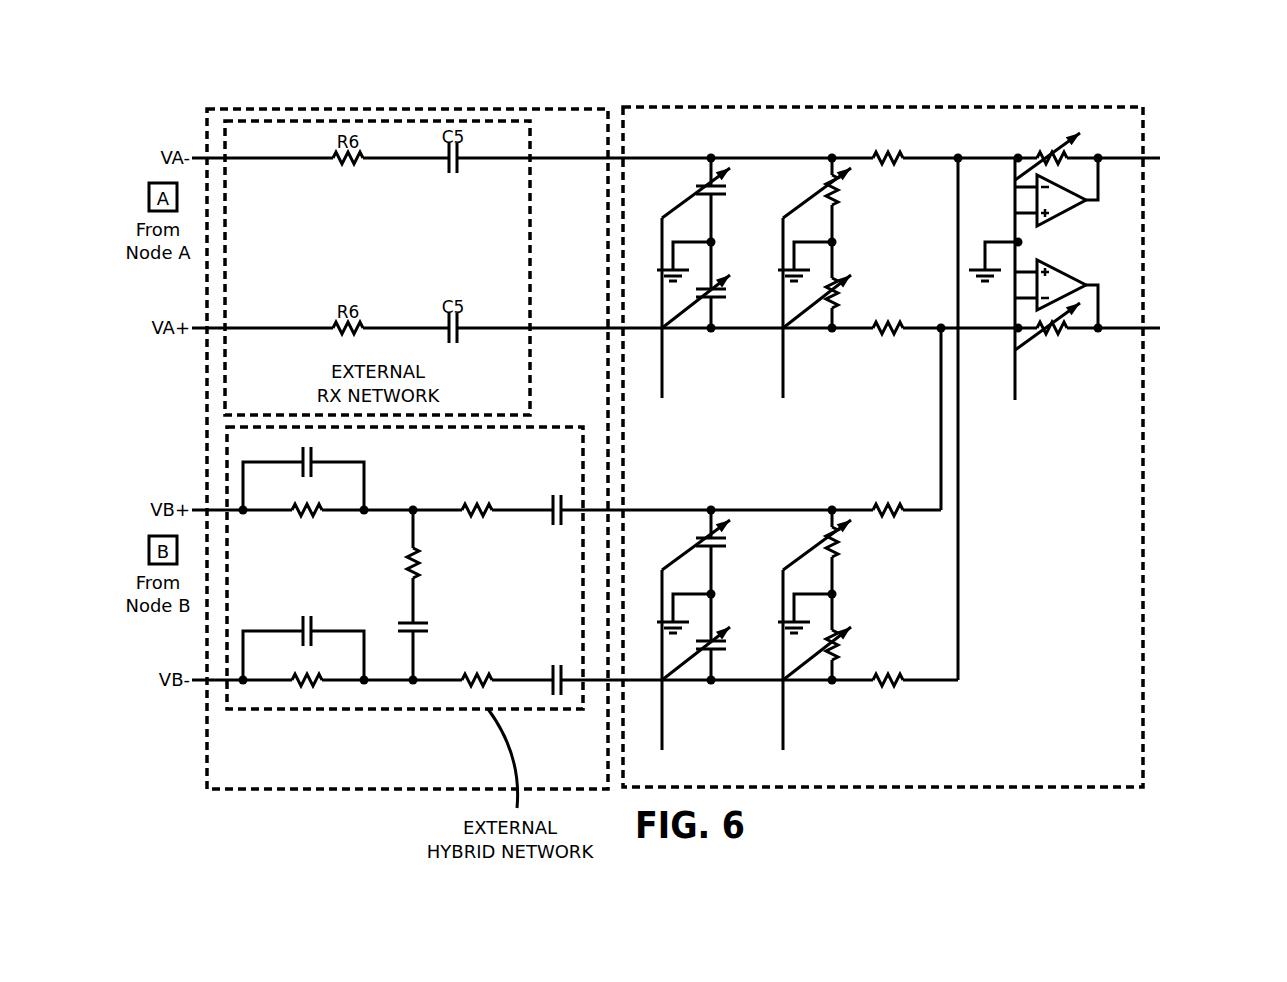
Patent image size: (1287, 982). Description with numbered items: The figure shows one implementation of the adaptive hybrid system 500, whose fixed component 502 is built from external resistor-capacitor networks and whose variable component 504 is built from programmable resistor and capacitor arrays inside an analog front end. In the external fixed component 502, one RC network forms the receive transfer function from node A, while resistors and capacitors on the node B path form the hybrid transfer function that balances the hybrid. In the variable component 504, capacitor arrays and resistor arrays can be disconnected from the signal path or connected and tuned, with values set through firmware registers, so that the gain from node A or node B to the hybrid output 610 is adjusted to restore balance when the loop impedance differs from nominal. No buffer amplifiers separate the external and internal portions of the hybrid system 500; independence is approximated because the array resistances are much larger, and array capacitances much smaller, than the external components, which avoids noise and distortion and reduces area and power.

The adaptive hybrid system 500 is at (1108, 87).
The external fixed component 502 is at (405, 600).
The hybrid structure variable component 504 is at (881, 453).
The hybrid output 610 is at (1254, 268).